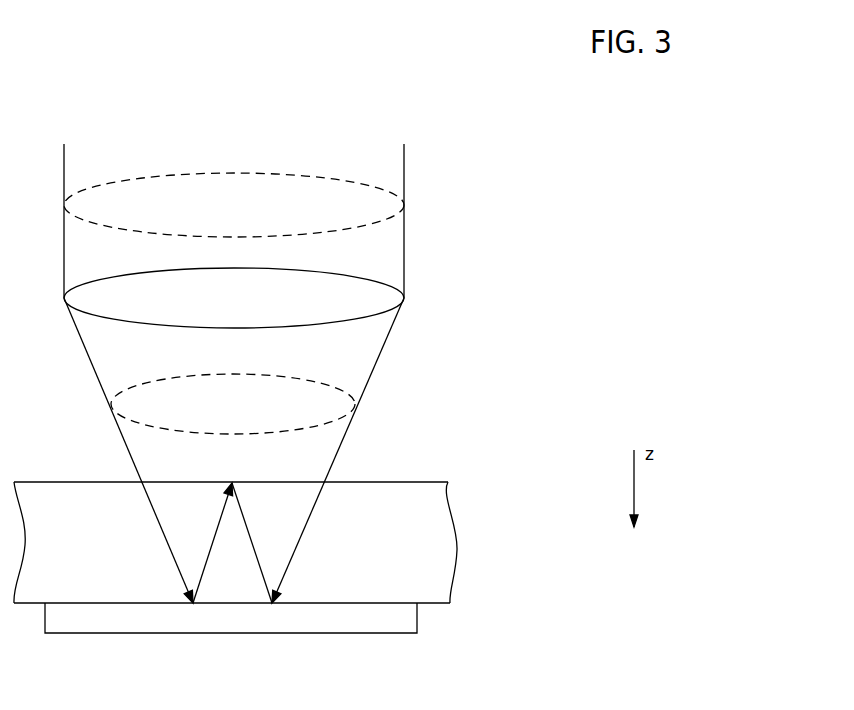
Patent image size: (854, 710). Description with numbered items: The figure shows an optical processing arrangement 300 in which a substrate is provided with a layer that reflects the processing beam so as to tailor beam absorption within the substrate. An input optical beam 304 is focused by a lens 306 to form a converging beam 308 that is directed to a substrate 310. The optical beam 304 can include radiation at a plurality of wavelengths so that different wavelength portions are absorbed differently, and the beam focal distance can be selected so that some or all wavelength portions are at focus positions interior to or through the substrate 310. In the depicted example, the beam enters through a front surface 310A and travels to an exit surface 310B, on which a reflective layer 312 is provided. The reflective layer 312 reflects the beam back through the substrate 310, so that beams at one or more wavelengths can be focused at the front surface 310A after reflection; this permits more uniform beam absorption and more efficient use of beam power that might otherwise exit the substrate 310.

The optical inspection system 300 is at (572, 252).
The input optical beam 304 is at (372, 188).
The lens 306 is at (405, 257).
The converging beam 308 is at (330, 385).
The substrate 310 is at (296, 513).
The front surface 310A is at (392, 482).
The exit surface 310B is at (420, 603).
The reflective layer 312 is at (400, 623).